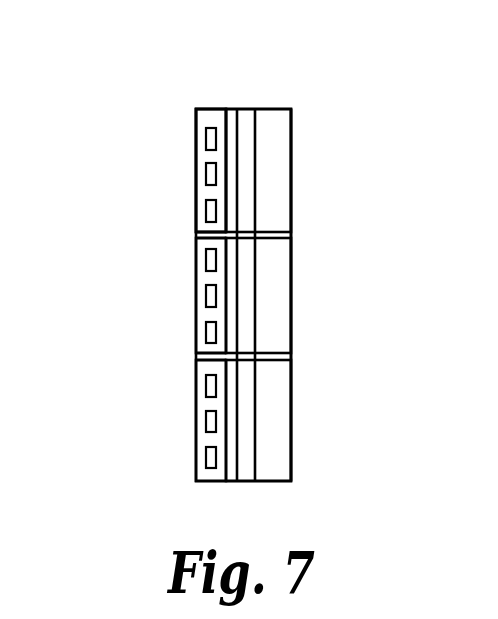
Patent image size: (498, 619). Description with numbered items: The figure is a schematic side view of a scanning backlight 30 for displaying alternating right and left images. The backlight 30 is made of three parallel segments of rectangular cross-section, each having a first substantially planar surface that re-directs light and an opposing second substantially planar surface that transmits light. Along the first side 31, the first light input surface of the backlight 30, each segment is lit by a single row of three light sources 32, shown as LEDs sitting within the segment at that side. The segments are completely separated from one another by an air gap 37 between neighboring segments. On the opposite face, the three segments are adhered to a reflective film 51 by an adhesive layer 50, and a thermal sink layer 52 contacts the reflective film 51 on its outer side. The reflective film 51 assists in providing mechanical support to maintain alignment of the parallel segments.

The scanning backlight 30 is at (172, 102).
The first side 31 is at (212, 118).
The first light sources 32 is at (206, 211).
The air gap 37 is at (194, 236).
The adhesive layer 50 is at (230, 482).
The reflective film 51 is at (248, 482).
The thermal sink layer 52 is at (278, 460).